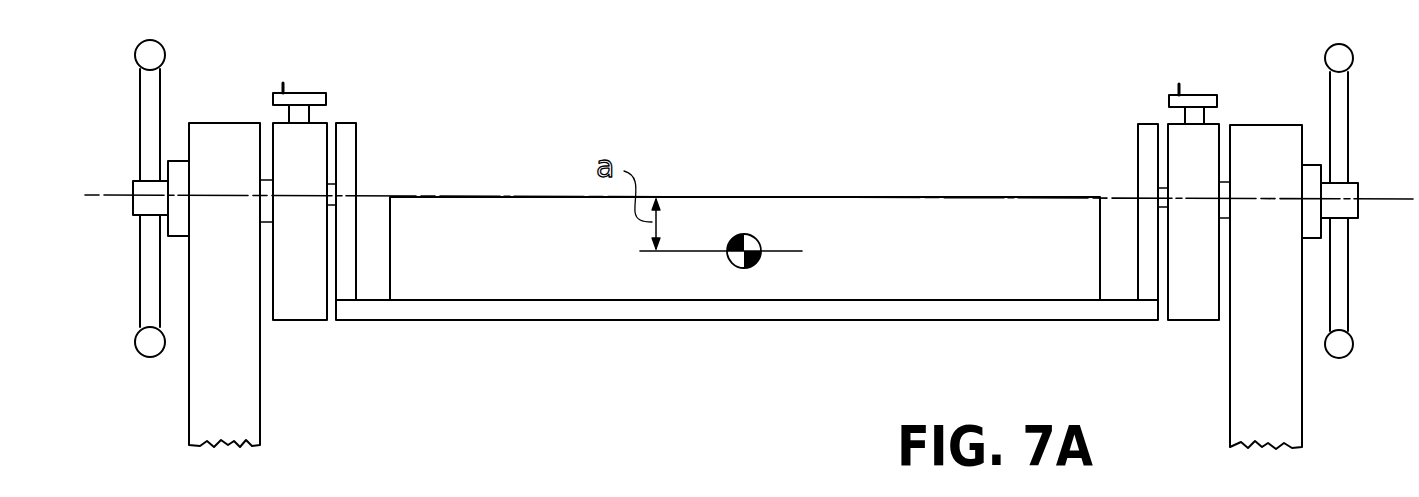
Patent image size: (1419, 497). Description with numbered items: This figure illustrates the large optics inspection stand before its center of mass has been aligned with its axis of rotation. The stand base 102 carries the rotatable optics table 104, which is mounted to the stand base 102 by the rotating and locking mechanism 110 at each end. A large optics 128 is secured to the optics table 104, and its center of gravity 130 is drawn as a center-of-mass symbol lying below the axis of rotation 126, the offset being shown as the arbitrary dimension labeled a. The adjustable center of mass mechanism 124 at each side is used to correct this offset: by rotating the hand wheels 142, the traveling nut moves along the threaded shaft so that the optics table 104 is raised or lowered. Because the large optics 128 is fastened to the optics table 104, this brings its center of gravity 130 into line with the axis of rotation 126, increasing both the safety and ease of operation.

The stand base 102 is at (260, 424).
The rotatable optics table 104 is at (747, 248).
The rotating and locking mechanism 110 is at (132, 183).
The mechanism 124 is at (298, 321).
The axis of rotation 126 is at (122, 197).
The large optics 128 is at (511, 249).
The center of gravity 130 is at (760, 241).
The hand wheel 142 is at (308, 93).